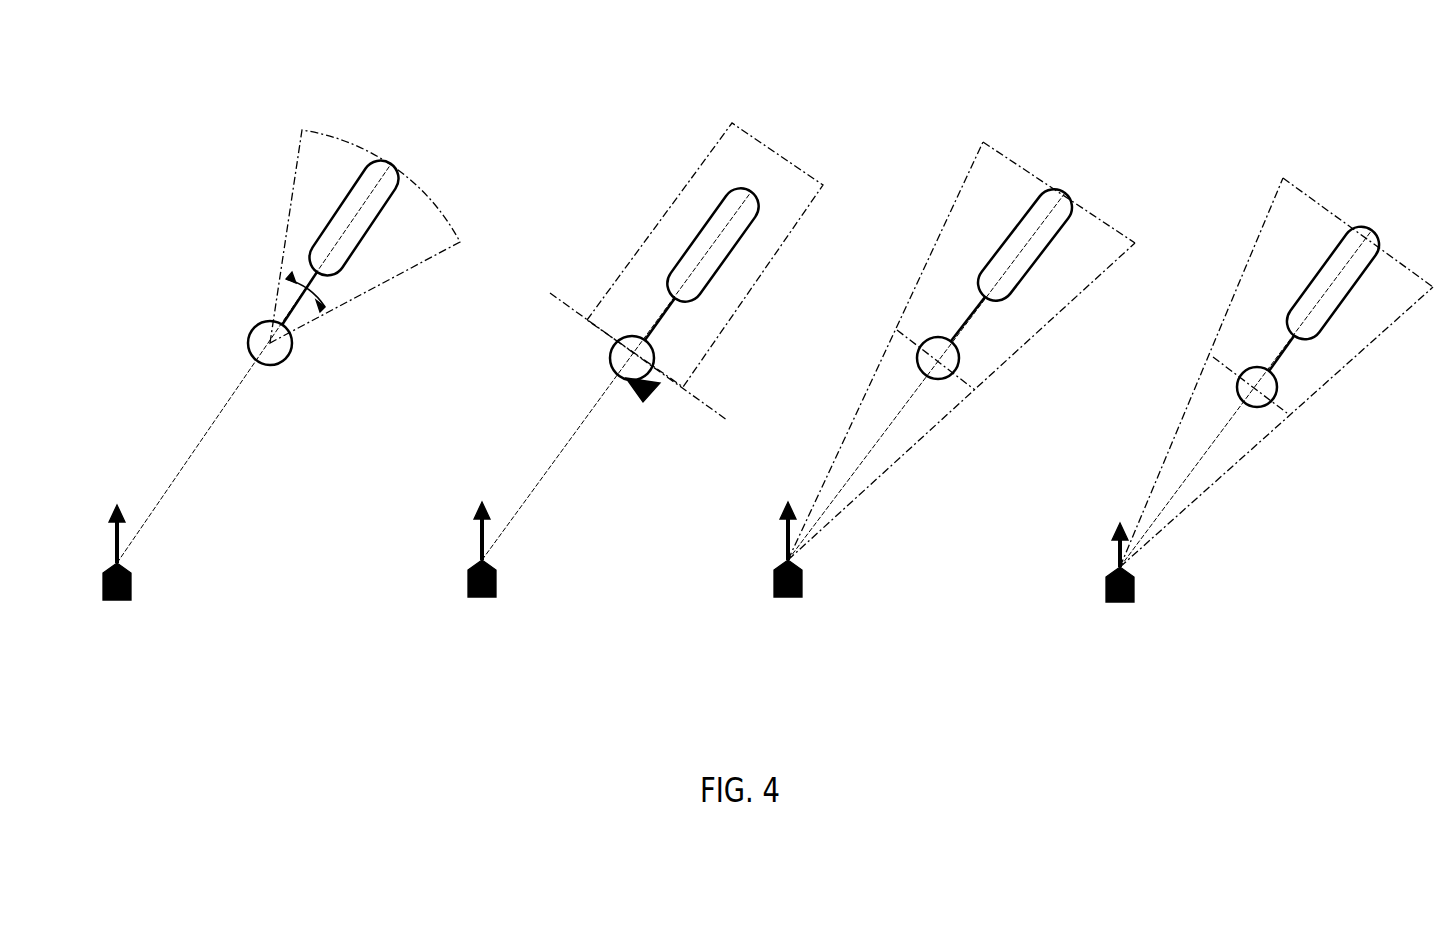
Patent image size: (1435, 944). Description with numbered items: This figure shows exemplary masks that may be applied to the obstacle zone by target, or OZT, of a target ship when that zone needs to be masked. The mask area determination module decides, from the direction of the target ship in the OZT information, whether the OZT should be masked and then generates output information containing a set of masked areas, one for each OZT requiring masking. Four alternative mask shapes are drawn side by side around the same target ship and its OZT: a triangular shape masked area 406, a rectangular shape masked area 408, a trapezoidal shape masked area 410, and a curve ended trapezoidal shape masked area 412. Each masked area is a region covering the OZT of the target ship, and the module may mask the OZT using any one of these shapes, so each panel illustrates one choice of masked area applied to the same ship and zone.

The triangular shape masked area 406 is at (377, 147).
The rectangular shape masked area 408 is at (773, 158).
The trapezoidal shape masked area 410 is at (1033, 178).
The curve ended trapezoidal shape masked area 412 is at (1305, 193).